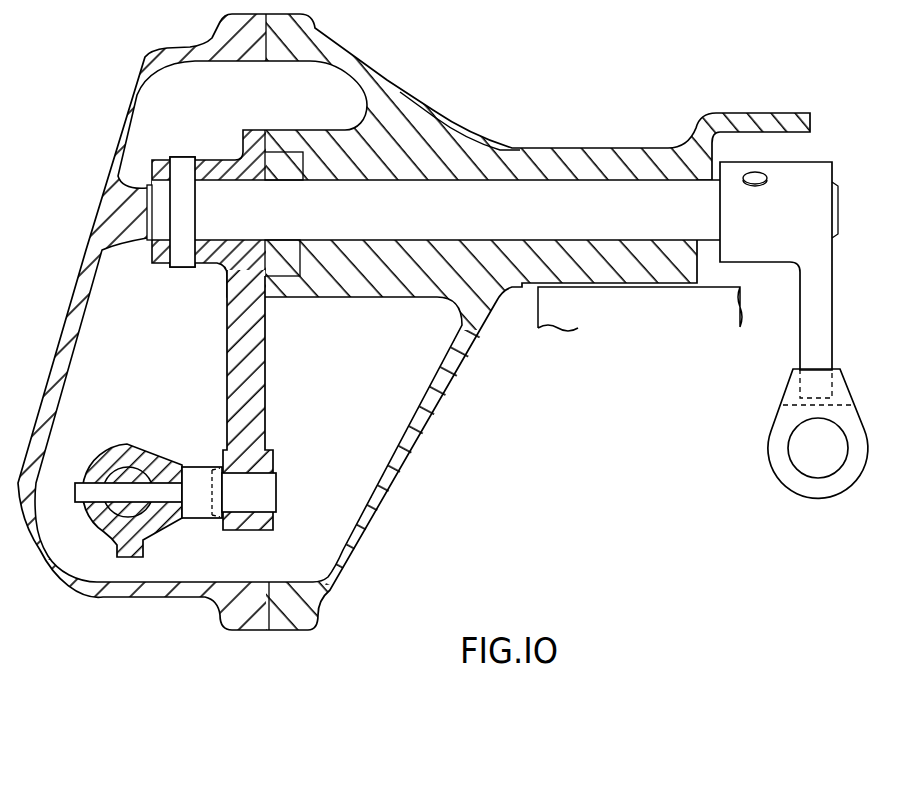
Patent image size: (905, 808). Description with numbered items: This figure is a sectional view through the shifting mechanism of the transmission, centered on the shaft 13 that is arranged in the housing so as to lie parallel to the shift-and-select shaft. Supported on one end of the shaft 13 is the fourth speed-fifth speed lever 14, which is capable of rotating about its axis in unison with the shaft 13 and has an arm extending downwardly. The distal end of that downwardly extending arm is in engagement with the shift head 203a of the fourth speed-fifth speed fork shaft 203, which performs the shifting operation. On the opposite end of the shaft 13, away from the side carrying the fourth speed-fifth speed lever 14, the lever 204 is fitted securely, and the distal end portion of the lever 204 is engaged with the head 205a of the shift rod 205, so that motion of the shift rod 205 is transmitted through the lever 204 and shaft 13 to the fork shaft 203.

The shaft 13 is at (552, 190).
The fourth speed-fifth speed lever 14 is at (820, 172).
The fourth speed-fifth speed fork shaft 203 is at (800, 462).
The shift head 203a is at (772, 442).
The lever 204 is at (257, 370).
The shift rod 205 is at (138, 474).
The head 205a is at (157, 527).